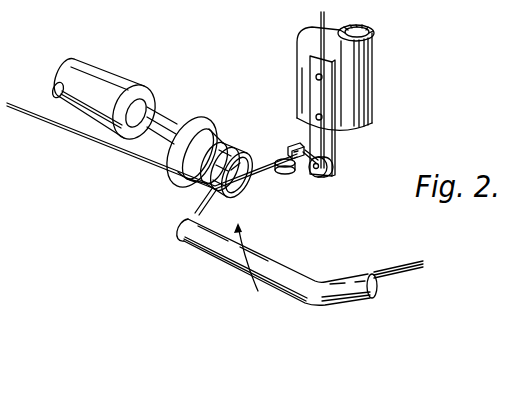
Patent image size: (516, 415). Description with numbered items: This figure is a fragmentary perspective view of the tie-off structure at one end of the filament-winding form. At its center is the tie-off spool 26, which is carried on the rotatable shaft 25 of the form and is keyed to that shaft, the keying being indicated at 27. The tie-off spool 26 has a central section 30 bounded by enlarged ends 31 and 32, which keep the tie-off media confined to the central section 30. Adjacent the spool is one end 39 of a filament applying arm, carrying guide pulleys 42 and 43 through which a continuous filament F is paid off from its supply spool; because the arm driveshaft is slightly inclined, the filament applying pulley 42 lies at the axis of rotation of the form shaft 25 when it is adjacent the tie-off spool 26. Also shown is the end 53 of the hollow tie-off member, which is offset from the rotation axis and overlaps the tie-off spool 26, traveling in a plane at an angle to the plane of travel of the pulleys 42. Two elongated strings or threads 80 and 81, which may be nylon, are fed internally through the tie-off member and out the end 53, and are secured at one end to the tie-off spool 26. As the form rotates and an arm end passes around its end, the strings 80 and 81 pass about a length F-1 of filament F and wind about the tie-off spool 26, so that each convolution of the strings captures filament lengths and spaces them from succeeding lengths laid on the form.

The rotatable shaft 25 is at (101, 88).
The tie-off spool 26 is at (241, 197).
The key 27 is at (158, 140).
The central section 30 is at (176, 178).
The enlarged end 31 is at (203, 122).
The enlarged end 32 is at (247, 157).
The end of filament applying arm 39 is at (387, 64).
The guide pulley 42 is at (286, 175).
The guide pulley 43 is at (326, 175).
The end of tie-off member 53 is at (226, 258).
The tie-off string 80 is at (407, 270).
The tie-off string 81 is at (397, 265).
The filament F is at (326, 22).
The filament length F-1 is at (79, 131).